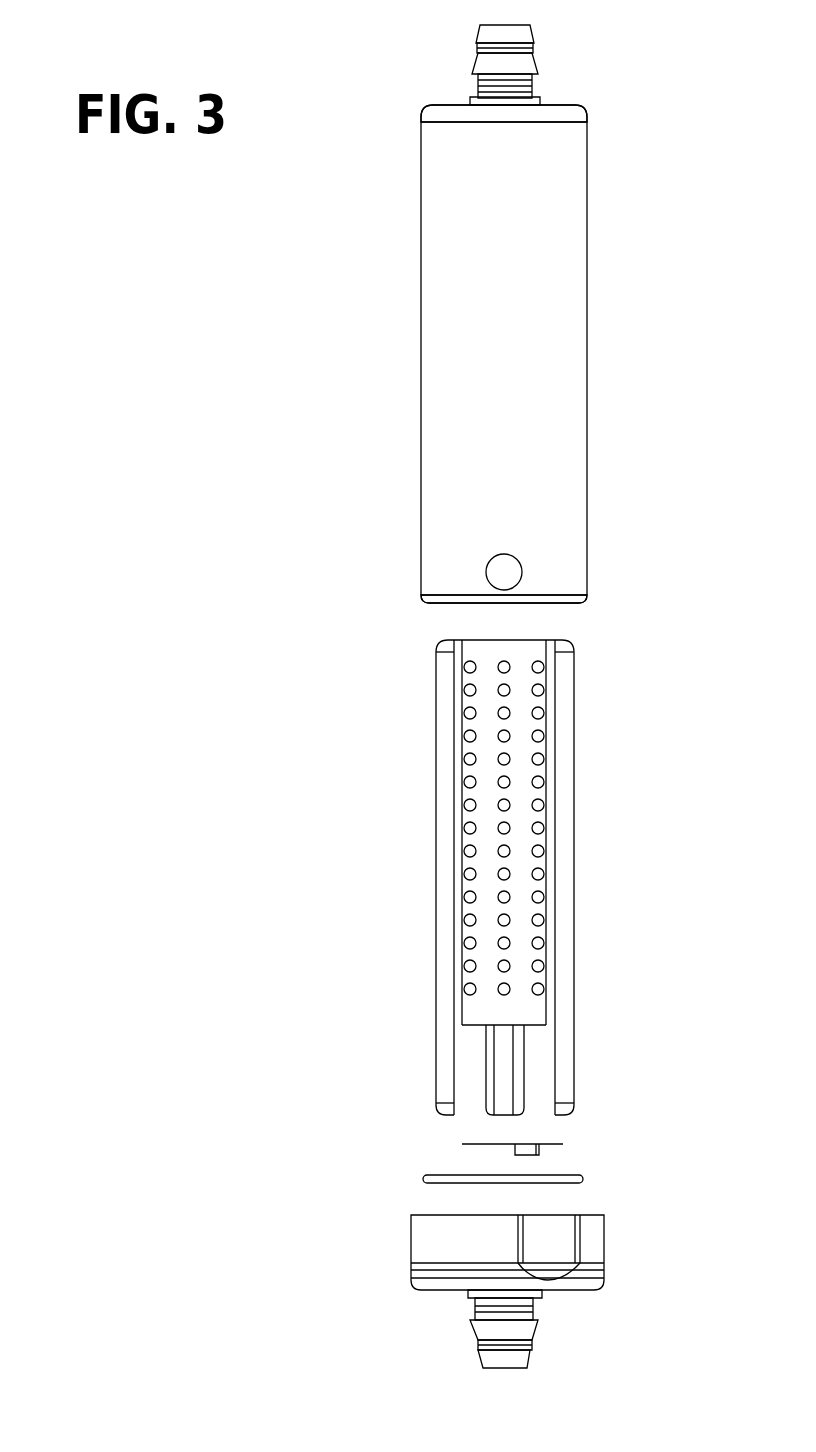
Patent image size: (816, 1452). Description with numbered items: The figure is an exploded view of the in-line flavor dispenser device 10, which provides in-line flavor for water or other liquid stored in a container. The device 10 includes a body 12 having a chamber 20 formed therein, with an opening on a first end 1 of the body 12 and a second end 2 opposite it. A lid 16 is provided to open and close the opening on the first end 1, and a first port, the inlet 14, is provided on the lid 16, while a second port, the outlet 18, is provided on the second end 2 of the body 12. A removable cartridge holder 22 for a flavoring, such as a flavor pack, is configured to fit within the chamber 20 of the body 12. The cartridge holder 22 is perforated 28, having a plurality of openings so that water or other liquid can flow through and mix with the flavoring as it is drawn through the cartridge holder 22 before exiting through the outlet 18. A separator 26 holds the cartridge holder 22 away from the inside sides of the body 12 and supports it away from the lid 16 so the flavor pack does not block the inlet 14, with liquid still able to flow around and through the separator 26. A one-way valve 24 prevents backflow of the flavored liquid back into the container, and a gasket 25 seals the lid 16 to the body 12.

The in-line flavor dispenser device 10 is at (648, 133).
The outlet 18 is at (505, 25).
The second end 2 is at (555, 105).
The body 12 is at (585, 432).
The first end 1 is at (428, 604).
The chamber 20 is at (515, 863).
The cartridge holder 22 is at (527, 640).
The perforations 28 is at (540, 757).
The separator 26 is at (575, 1060).
The one-way valve 24 is at (556, 1142).
The gasket 25 is at (578, 1175).
The lid 16 is at (605, 1223).
The inlet 14 is at (530, 1362).